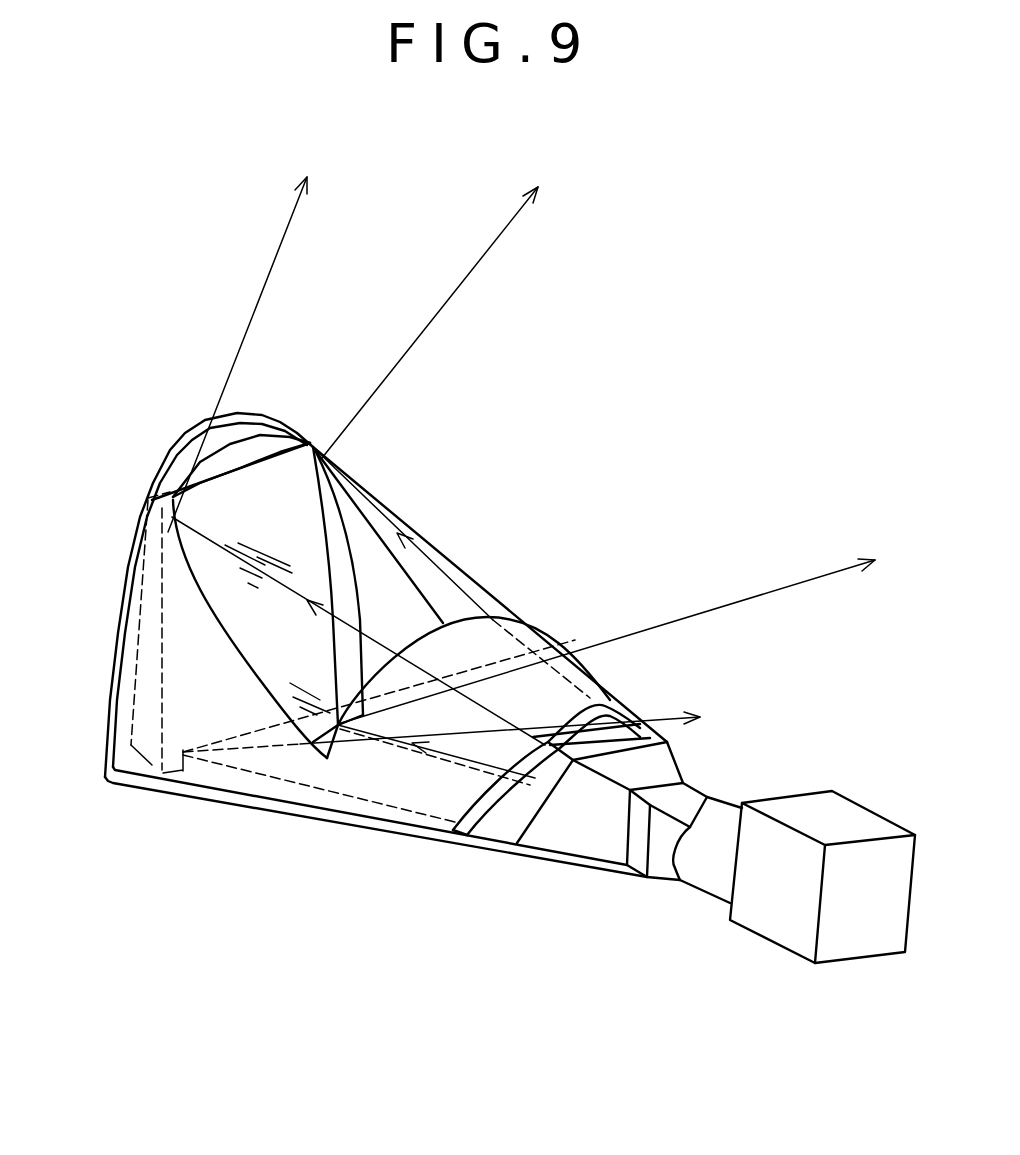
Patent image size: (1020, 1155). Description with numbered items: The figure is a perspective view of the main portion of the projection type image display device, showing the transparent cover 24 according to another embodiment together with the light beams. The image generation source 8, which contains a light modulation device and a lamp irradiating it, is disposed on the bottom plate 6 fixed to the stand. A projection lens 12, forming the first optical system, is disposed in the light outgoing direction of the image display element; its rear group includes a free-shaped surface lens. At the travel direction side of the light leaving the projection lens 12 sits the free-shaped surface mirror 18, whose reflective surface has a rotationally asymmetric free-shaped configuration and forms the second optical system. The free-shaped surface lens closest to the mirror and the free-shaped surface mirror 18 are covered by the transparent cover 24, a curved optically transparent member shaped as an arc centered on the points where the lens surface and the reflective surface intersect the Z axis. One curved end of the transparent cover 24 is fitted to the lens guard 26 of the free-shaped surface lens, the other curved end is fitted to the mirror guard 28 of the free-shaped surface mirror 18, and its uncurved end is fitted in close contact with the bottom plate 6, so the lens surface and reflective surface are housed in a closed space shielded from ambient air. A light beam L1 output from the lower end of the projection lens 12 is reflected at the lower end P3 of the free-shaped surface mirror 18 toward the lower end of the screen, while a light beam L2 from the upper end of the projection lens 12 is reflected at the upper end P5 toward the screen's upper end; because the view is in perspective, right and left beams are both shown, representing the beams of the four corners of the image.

The bottom plate 6 is at (300, 815).
The image generation source 8 is at (765, 940).
The projection lens 12 is at (678, 762).
The free-shaped surface mirror 18 is at (318, 496).
The transparent cover 24 is at (437, 545).
The lens guard 26 is at (483, 838).
The mirror guard 28 is at (177, 433).
The light beam L1 is at (738, 605).
The light beam L2 is at (422, 332).
The lower end of the free-shaped surface mirror P3 is at (183, 752).
The upper end of the free-shaped surface mirror P5 is at (135, 528).